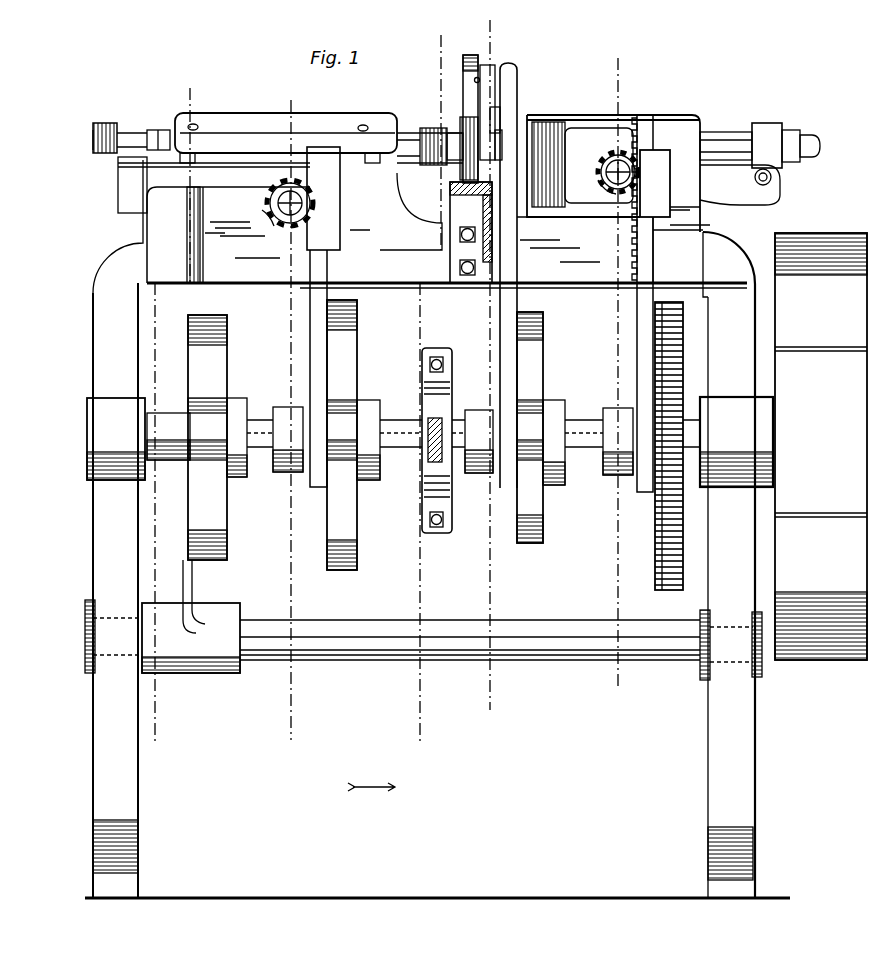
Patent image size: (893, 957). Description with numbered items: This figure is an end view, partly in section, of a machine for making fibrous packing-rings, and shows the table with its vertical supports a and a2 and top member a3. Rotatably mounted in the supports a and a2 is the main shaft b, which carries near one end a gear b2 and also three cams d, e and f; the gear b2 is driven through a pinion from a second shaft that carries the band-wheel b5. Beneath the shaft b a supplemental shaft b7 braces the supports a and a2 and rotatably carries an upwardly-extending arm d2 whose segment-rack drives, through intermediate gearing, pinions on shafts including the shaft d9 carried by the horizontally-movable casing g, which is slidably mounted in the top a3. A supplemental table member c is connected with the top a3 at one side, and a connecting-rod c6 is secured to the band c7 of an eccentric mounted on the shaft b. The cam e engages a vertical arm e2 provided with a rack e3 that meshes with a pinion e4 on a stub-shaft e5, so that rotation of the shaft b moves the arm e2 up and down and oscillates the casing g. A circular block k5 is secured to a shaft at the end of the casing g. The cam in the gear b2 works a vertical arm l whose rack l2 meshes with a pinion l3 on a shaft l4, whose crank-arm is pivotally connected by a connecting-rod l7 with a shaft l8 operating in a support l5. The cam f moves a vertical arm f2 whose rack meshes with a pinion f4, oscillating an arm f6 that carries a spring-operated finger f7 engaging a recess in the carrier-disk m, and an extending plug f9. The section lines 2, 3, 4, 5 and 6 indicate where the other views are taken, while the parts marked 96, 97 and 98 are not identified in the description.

The vertical support a is at (140, 792).
The vertical support a2 is at (708, 792).
The top member a3 is at (432, 222).
The shaft b is at (407, 460).
The gear b2 is at (670, 590).
The band-wheel b5 is at (821, 446).
The supplemental shaft b7 is at (365, 660).
The supplemental table member c is at (471, 232).
The connecting-rod c6 is at (430, 432).
The band c7 is at (423, 387).
The cam d is at (222, 350).
The upwardly-extending arm d2 is at (183, 585).
The shaft d9 is at (407, 133).
The cam e is at (351, 435).
The vertical arm e2 is at (313, 303).
The rack e3 is at (307, 240).
The pinion e4 is at (262, 210).
The stub-shaft e5 is at (288, 200).
The cam f is at (543, 335).
The vertical arm f2 is at (517, 267).
The pinion f4 is at (502, 133).
The arm f6 is at (490, 108).
The spring-operated finger f7 is at (480, 78).
The extending plug f9 is at (480, 110).
The casing g is at (257, 140).
The circular block k5 is at (432, 163).
The vertical arm l is at (643, 357).
The rack l2 is at (637, 227).
The pinion l3 is at (609, 162).
The shaft l4 is at (598, 180).
The support l5 is at (688, 117).
The connecting-rod l7 is at (746, 192).
The shaft l8 is at (725, 137).
The carrier-disk m is at (471, 55).
The section line 2 is at (427, 392).
The section line 3 is at (289, 422).
The section line 4 is at (168, 416).
The section line 5 is at (618, 374).
The section line 6 is at (489, 367).
The nut 96 is at (140, 135).
The spring 97 is at (93, 127).
The bearing 98 is at (110, 125).